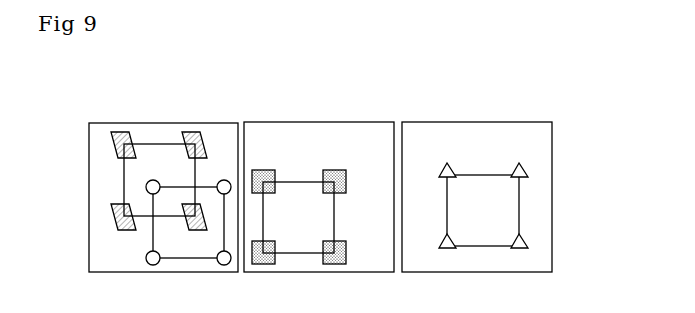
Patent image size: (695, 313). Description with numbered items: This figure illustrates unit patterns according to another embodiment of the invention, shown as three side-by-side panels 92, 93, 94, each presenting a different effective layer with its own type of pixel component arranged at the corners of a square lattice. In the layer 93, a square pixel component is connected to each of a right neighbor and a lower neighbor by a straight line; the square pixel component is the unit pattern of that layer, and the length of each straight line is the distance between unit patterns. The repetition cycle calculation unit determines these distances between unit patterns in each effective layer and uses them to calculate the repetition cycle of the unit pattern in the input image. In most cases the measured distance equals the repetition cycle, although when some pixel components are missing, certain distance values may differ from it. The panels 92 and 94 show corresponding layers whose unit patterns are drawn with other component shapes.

The image of first sub-pixel array pattern 92 is at (163, 122).
The layer 93 is at (320, 122).
The image of third sub-pixel array pattern 94 is at (477, 122).